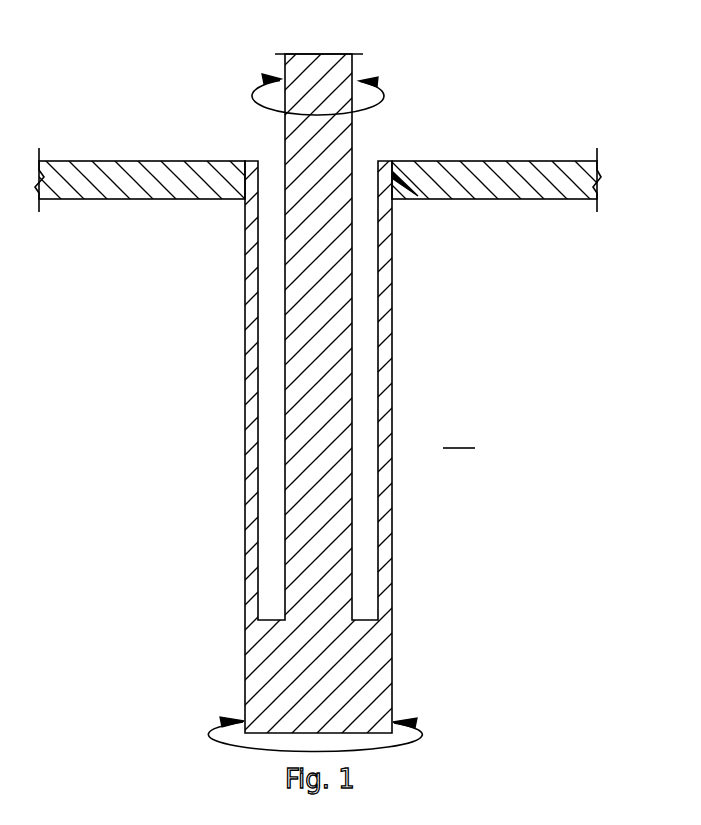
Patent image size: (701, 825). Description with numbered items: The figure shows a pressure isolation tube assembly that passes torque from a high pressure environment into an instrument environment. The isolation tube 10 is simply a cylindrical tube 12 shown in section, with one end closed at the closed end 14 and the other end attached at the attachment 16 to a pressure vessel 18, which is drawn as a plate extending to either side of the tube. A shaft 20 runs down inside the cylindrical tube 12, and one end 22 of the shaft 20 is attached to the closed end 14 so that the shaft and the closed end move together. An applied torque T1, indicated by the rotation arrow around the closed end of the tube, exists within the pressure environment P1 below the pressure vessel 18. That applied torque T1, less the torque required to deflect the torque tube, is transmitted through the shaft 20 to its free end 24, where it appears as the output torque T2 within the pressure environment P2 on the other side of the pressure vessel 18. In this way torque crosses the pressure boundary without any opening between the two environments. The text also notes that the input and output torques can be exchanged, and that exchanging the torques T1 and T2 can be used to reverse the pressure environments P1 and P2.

The isolation tube 10 is at (398, 302).
The cylindrical tube 12 is at (245, 402).
The closed end 14 is at (370, 619).
The attachment to pressure vessel 16 is at (418, 197).
The pressure vessel 18 is at (541, 163).
The shaft 20 is at (285, 138).
The end of shaft 22 is at (284, 619).
The free end 24 is at (328, 61).
The applied torque T1 is at (372, 749).
The output torque T2 is at (385, 97).
The pressure environment P1 is at (459, 435).
The pressure environment P2 is at (460, 127).